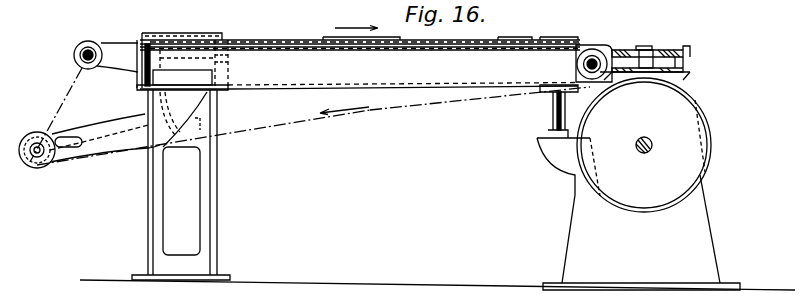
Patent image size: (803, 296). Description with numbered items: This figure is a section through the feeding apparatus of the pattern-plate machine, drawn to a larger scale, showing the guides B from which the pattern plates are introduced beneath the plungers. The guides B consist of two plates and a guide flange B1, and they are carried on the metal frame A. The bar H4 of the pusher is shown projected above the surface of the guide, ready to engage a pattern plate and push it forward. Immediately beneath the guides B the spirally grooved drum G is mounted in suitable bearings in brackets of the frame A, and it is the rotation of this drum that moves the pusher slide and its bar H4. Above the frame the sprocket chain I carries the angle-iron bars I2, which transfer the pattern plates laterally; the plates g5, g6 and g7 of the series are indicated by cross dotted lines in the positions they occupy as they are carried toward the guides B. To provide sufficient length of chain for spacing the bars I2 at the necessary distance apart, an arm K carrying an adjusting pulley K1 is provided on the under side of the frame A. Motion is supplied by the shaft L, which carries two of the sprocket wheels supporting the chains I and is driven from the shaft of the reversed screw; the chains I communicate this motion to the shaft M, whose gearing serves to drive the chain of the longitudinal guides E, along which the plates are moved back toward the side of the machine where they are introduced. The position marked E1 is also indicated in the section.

The shaft M is at (88, 41).
The pattern plate g5 is at (208, 35).
The pattern plate g6 is at (327, 37).
The pattern plate g7 is at (545, 37).
The bar I2 is at (503, 40).
The sprocket chain I is at (442, 107).
The longitudinal guide E is at (140, 78).
The slot E1 is at (222, 66).
The metal frame A is at (216, 162).
The shaft L is at (596, 50).
The guide B is at (618, 50).
The guide flange B1 is at (692, 49).
The bar H4 is at (640, 47).
The drum G is at (711, 146).
The arm K is at (88, 126).
The adjusting pulley K1 is at (40, 162).